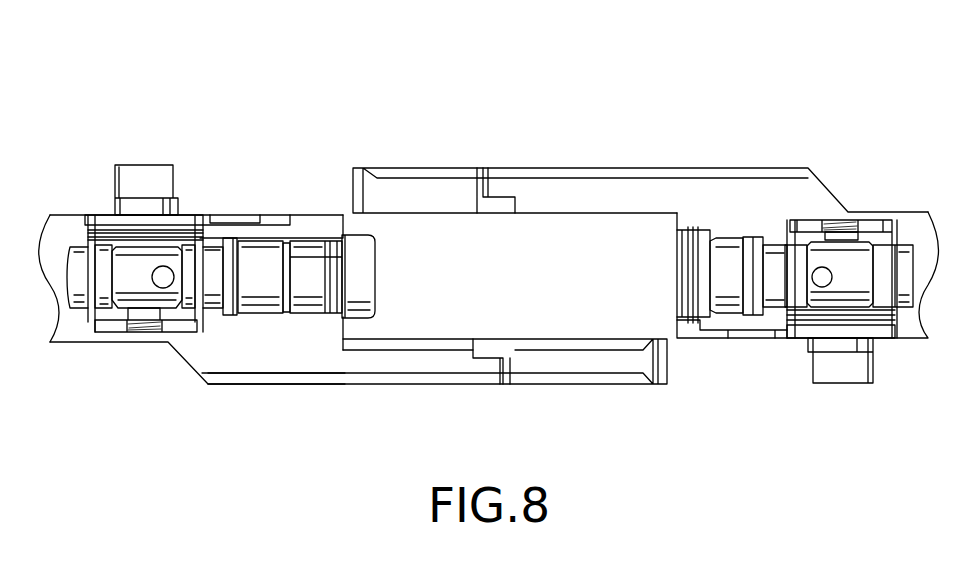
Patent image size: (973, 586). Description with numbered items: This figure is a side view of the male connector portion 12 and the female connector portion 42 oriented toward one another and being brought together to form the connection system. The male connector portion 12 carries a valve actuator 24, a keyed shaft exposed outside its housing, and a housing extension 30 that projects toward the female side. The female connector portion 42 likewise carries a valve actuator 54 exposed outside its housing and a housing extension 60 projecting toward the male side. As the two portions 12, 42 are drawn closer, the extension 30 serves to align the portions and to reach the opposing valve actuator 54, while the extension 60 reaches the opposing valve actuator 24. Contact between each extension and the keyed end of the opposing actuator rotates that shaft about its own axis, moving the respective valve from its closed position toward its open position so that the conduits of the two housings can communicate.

The male connector portion 12 is at (177, 360).
The valve actuator 24 is at (200, 185).
The housing extension 30 is at (405, 363).
The housing 42 is at (847, 170).
The valve actuator 54 is at (793, 352).
The housing extension 60 is at (548, 188).